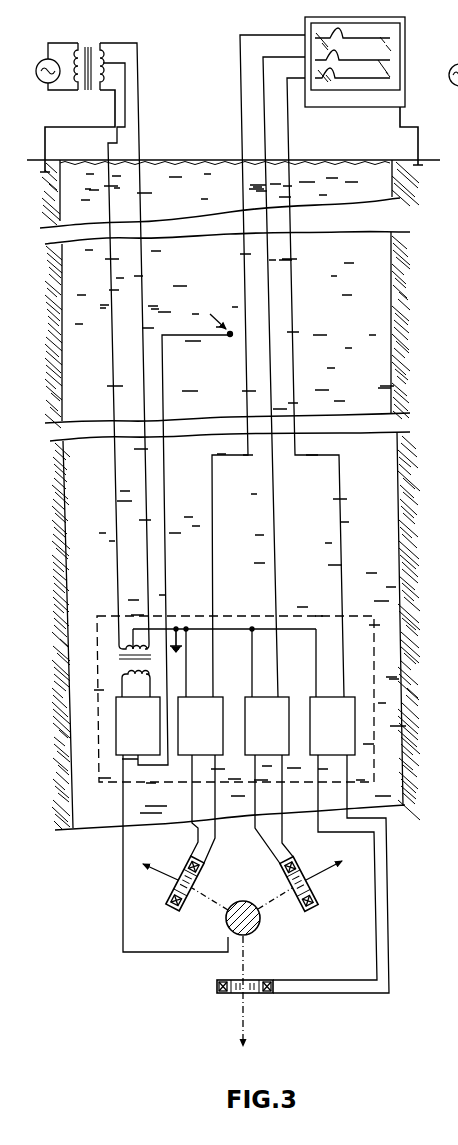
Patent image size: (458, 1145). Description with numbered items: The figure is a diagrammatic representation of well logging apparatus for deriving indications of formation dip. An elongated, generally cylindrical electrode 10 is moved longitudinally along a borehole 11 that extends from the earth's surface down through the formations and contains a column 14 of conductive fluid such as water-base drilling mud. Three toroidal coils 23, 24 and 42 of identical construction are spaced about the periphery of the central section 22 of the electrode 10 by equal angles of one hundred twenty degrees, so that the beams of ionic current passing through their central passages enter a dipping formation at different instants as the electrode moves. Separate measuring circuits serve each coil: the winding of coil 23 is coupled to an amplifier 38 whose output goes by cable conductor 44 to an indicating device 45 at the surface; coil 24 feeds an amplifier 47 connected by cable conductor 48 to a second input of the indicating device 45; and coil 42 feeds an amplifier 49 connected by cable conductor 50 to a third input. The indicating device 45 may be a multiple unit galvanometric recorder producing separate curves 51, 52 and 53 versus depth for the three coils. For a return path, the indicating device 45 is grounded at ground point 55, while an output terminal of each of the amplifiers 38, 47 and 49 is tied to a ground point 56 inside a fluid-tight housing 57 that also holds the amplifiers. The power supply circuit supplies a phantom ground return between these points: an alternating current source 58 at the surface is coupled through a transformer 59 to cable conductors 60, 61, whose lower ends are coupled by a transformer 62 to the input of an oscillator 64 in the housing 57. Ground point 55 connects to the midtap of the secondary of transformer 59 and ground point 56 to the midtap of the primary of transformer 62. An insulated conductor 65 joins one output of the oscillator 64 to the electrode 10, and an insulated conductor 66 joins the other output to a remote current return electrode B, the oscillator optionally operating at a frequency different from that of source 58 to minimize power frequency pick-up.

The electrode 10 is at (264, 927).
The borehole 11 is at (390, 300).
The column of conductive fluid 14 is at (158, 799).
The central section 22 is at (256, 938).
The toroidal coil 23 is at (206, 869).
The toroidal coil 24 is at (217, 986).
The amplifier 38 is at (218, 697).
The toroidal coil 42 is at (322, 897).
The cable conductor 44 is at (236, 82).
The indicating device 45 is at (406, 62).
The amplifier 47 is at (348, 697).
The cable conductor 48 is at (290, 125).
The amplifier 49 is at (284, 697).
The cable conductor 50 is at (270, 302).
The curve 51 is at (350, 39).
The curve 52 is at (348, 61).
The curve 53 is at (346, 79).
The ground point 55 is at (45, 176).
The ground point 56 is at (180, 654).
The fluid-tight housing 57 is at (372, 622).
The alternating current source 58 is at (43, 83).
The transformer 59 is at (88, 45).
The cable conductor 60 is at (110, 211).
The cable conductor 61 is at (141, 212).
The transformer 62 is at (117, 656).
The oscillator 64 is at (116, 731).
The insulated conductor 65 is at (124, 864).
The insulated conductor 66 is at (163, 378).